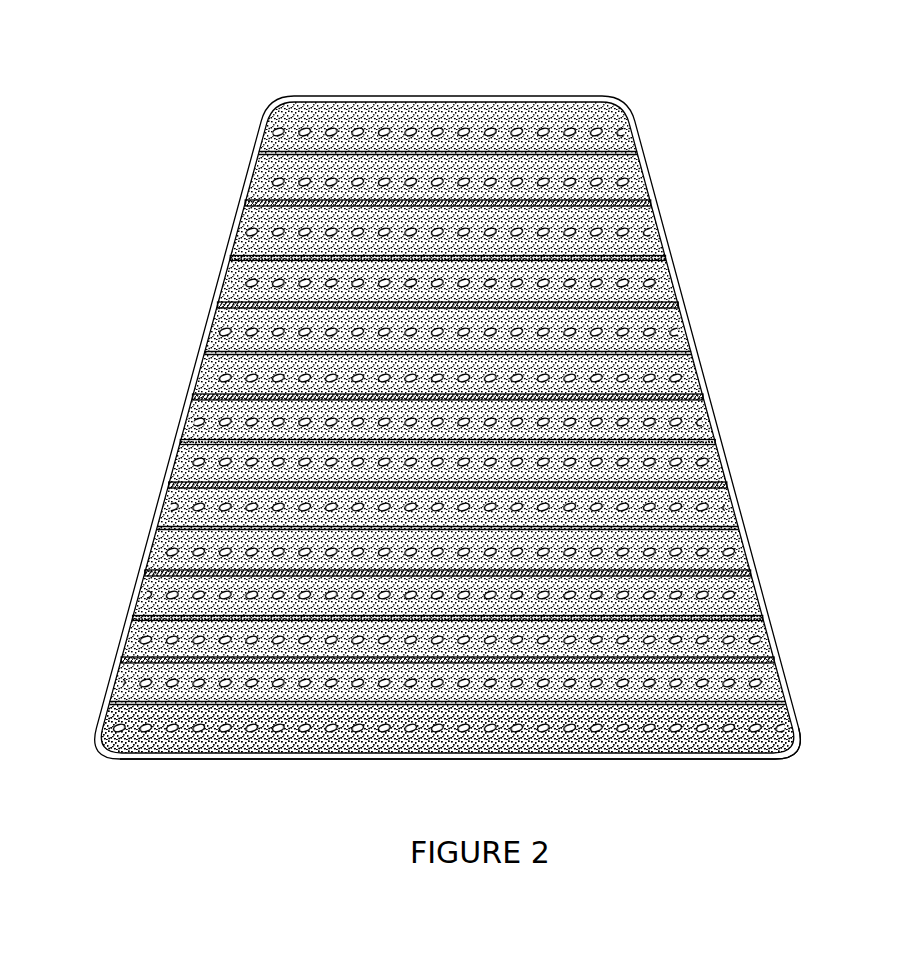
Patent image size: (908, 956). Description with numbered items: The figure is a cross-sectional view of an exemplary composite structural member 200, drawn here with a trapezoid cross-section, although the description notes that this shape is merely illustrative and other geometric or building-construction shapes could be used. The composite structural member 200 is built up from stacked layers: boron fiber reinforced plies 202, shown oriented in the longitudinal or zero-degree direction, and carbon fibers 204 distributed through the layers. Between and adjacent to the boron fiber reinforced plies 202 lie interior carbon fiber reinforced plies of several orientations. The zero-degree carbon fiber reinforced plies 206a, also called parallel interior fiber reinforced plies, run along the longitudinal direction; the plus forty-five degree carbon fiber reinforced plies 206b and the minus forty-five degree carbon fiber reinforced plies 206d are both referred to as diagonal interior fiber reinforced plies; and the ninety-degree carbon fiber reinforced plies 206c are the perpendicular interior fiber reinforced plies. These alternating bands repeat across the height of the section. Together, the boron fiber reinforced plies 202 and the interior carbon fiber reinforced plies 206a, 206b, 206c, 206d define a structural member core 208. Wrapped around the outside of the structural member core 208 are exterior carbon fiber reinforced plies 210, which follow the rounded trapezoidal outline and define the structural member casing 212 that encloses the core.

The composite structural member 200 is at (393, 58).
The boron fiber reinforced plies 202 is at (627, 156).
The carbon fibers 204 is at (632, 178).
The 0° carbon fiber reinforced plies 206a is at (617, 136).
The +45° carbon fiber reinforced plies 206b is at (662, 303).
The 90° carbon fiber reinforced plies 206c is at (242, 257).
The −45° carbon fiber reinforced plies 206d is at (250, 201).
The structural member core 208 is at (406, 720).
The exterior carbon fiber reinforced plies 210 is at (632, 755).
The structural member casing 212 is at (734, 770).